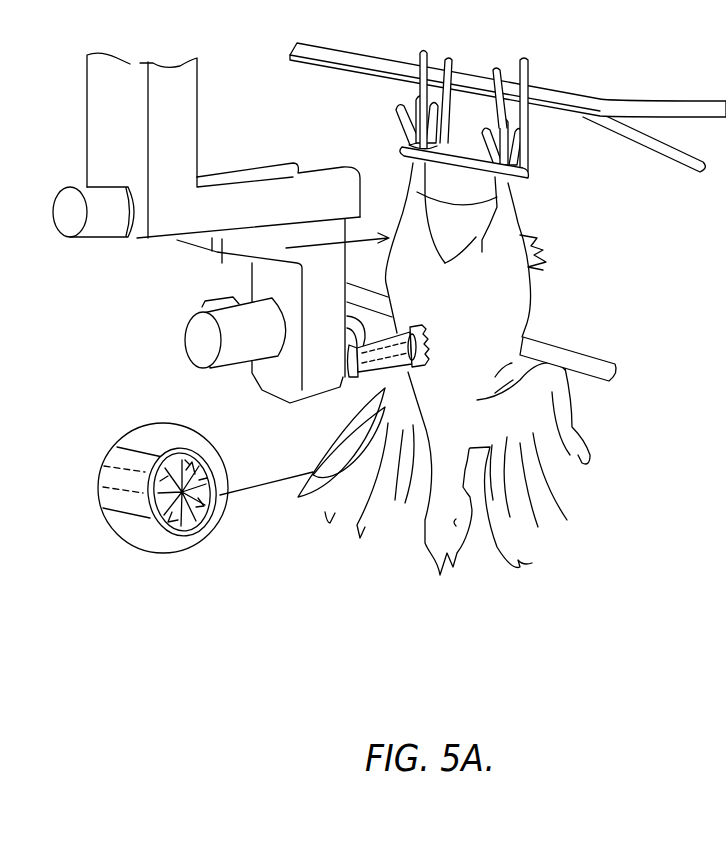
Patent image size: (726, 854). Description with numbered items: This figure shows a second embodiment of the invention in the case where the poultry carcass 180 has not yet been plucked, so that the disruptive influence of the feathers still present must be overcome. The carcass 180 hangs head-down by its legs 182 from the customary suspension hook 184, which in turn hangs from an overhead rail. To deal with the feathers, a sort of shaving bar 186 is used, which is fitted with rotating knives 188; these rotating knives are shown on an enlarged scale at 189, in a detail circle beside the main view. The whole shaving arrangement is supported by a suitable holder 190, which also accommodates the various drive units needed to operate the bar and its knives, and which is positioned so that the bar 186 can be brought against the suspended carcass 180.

The carcass 180 is at (518, 297).
The legs 182 is at (513, 207).
The suspension hook 184 is at (527, 135).
The shaving bar 186 is at (409, 381).
The rotating knives 188 is at (185, 453).
The enlarged-scale representation of the rotating knives 189 is at (200, 540).
The holder 190 is at (240, 243).